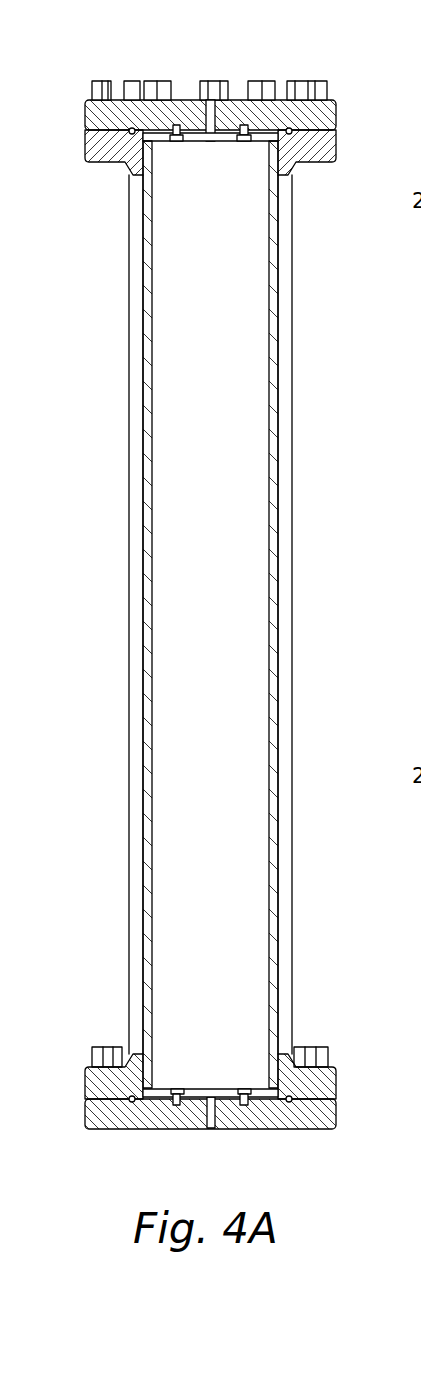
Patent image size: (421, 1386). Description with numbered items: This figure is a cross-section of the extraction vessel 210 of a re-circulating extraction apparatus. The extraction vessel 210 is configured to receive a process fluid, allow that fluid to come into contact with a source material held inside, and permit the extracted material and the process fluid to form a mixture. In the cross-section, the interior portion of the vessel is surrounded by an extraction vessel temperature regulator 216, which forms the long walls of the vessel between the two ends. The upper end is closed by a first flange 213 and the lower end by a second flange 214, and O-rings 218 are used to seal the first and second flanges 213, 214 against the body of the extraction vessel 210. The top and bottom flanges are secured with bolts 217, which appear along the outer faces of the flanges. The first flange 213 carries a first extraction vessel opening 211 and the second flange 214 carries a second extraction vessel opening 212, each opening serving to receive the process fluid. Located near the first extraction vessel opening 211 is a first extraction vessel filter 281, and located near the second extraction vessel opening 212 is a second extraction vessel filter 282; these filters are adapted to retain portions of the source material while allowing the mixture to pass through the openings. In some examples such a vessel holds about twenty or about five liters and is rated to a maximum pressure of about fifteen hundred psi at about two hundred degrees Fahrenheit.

The extraction vessel 210 is at (96, 608).
The first extraction vessel opening 211 is at (212, 120).
The second extraction vessel opening 212 is at (216, 1112).
The first flange 213 is at (337, 119).
The second flange 214 is at (337, 1122).
The extraction vessel temperature regulator 216 is at (138, 431).
The bolts 217 is at (198, 86).
The O-rings 218 is at (132, 128).
The first extraction vessel filter 281 is at (210, 142).
The second extraction vessel filter 282 is at (217, 1096).